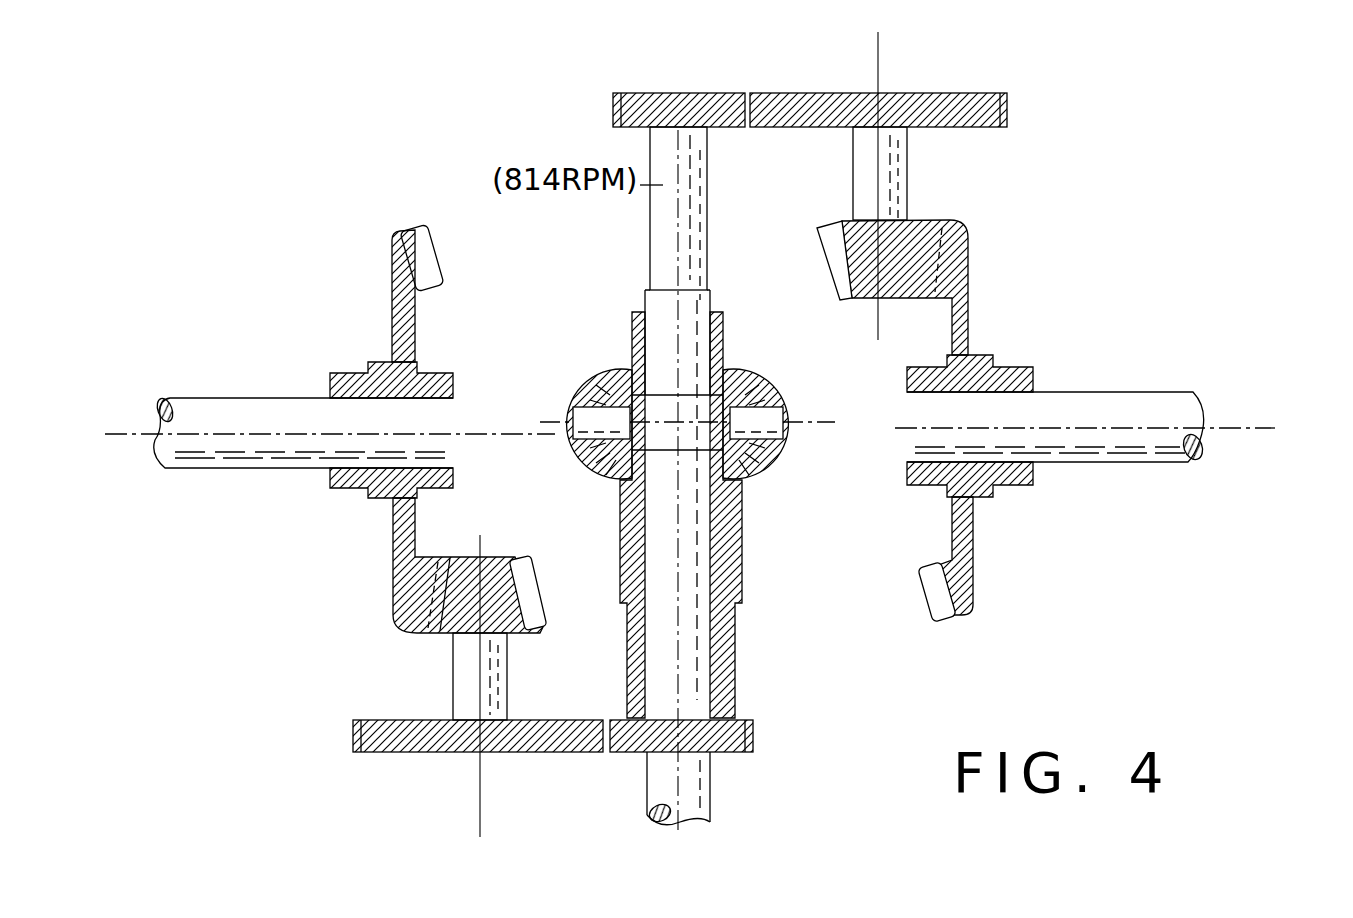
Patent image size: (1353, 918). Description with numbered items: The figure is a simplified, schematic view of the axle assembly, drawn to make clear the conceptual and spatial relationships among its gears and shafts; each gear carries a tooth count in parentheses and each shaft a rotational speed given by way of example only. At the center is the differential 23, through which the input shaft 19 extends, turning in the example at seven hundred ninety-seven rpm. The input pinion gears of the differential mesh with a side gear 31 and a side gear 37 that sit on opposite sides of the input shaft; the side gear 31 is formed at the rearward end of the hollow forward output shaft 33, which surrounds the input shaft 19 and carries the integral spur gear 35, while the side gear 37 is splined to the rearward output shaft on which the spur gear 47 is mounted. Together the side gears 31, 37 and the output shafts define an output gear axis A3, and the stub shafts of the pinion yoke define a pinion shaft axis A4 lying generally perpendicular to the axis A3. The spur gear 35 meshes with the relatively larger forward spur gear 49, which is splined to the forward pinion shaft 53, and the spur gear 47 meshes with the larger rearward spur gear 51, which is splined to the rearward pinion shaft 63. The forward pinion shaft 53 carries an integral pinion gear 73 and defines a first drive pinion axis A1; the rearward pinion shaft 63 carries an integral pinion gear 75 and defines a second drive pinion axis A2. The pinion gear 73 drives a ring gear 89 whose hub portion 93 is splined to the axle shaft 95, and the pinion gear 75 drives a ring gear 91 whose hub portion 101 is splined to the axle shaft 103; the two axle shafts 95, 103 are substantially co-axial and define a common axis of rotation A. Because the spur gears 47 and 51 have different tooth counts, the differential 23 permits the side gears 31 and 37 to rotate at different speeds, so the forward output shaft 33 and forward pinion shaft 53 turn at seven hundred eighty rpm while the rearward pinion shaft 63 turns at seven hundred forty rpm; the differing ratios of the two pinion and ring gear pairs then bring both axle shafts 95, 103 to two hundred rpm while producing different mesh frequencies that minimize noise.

The input shaft 19 is at (710, 825).
The differential 23 is at (672, 407).
The side gear 31 is at (630, 478).
The forward output shaft 33 is at (728, 620).
The spur gear 35 is at (735, 753).
The side gear 37 is at (725, 372).
The spur gear 47 is at (680, 112).
The forward spur gear 49 is at (385, 752).
The rearward spur gear 51 is at (938, 106).
The forward pinion shaft 53 is at (465, 688).
The rearward pinion shaft 63 is at (905, 155).
The pinion gear 73 is at (512, 583).
The pinion gear 75 is at (845, 260).
The ring gear 89 is at (393, 280).
The ring gear 91 is at (975, 525).
The hub portion 93 is at (345, 487).
The axle shaft 95 is at (240, 397).
The hub portion 101 is at (1013, 378).
The axle shaft 103 is at (1105, 390).
The common axis of rotation A is at (117, 434).
The first drive pinion axis A1 is at (482, 800).
The second drive pinion axis A2 is at (877, 52).
The output gear axis A3 is at (722, 522).
The pinion shaft axis A4 is at (815, 420).